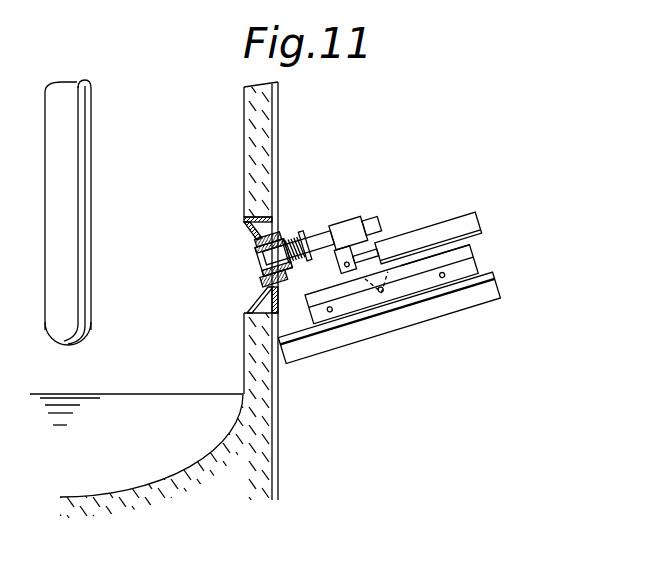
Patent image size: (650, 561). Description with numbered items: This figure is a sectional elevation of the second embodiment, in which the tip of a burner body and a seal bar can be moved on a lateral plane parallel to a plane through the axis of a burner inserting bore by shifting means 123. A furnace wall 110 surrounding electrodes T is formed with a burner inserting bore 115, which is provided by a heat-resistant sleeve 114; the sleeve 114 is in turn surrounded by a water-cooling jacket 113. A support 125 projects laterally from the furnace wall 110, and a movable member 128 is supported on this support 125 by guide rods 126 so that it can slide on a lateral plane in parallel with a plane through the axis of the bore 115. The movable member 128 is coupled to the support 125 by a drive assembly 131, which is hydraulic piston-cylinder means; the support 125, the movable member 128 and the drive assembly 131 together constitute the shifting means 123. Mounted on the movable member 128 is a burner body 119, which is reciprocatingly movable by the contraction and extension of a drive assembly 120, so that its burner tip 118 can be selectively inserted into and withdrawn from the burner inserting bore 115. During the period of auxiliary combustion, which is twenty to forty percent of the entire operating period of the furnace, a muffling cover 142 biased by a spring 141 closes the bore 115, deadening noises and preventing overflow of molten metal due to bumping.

The electrodes T is at (86, 167).
The furnace wall 110 is at (278, 133).
The muffling cover 142 is at (279, 216).
The burner inserting bore 115 is at (256, 237).
The burner tip 118 is at (259, 260).
The heat-resistant sleeve 114 is at (260, 284).
The water-cooling jacket 113 is at (252, 315).
The spring 141 is at (296, 240).
The burner body 119 is at (345, 218).
The drive assembly 120 is at (457, 225).
The movable member 128 is at (474, 244).
The shifting means 123 is at (481, 263).
The guide rods 126 is at (442, 278).
The drive assembly 131 is at (405, 308).
The support 125 is at (327, 347).